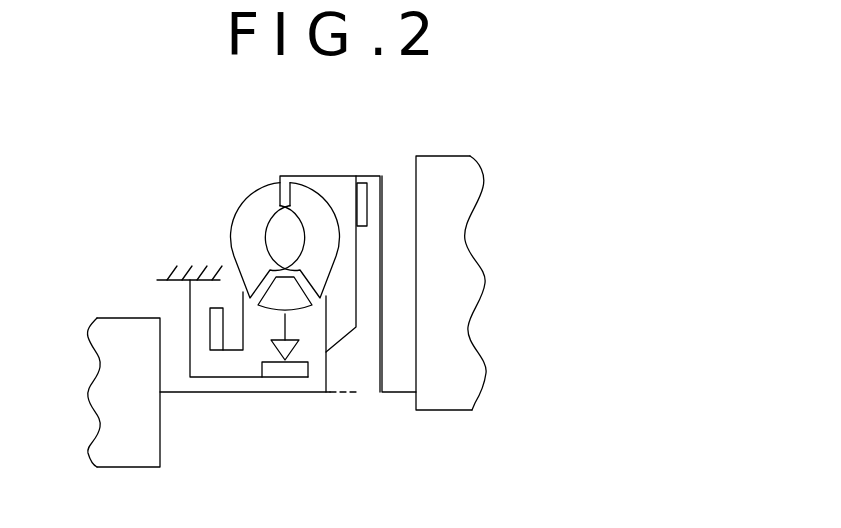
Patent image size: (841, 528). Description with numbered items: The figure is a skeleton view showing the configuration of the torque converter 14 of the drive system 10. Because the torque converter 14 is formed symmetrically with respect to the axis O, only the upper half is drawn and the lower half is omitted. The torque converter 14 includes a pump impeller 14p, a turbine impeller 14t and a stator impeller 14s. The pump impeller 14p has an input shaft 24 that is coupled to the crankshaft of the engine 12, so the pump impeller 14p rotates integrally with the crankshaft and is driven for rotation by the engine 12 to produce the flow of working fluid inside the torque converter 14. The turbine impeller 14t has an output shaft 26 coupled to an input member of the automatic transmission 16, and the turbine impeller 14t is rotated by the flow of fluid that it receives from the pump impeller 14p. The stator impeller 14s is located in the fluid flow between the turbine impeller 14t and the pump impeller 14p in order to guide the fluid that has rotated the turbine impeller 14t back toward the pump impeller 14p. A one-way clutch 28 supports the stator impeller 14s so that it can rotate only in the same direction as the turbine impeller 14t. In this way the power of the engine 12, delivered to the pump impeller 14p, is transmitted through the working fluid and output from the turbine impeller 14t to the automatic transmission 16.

The optical scanning device 10 is at (145, 168).
The engine 12 is at (438, 402).
The torque converter 14 is at (327, 152).
The pump impeller 14p is at (240, 222).
The stator impeller 14s is at (288, 293).
The turbine impeller 14t is at (327, 238).
The automatic transmission 16 is at (125, 328).
The input shaft 24 is at (403, 393).
The output shaft 26 is at (242, 395).
The one-way clutch 28 is at (297, 345).
The axis O is at (352, 395).